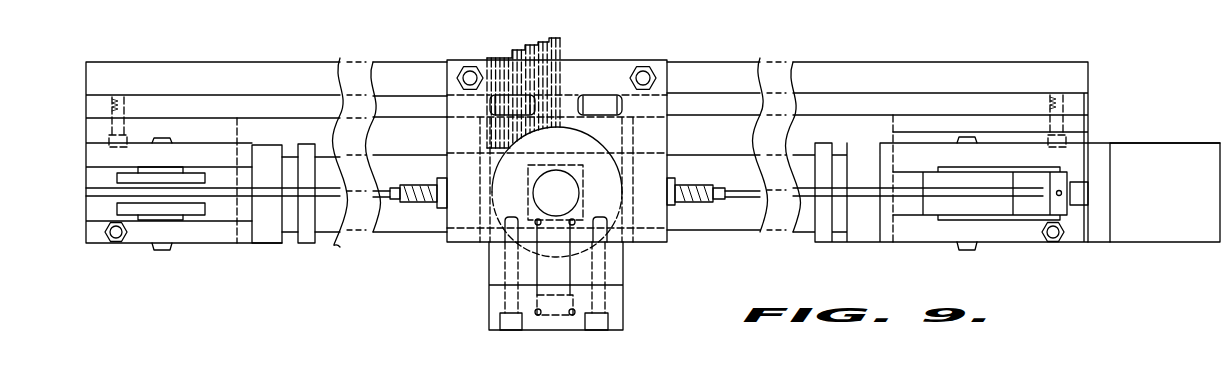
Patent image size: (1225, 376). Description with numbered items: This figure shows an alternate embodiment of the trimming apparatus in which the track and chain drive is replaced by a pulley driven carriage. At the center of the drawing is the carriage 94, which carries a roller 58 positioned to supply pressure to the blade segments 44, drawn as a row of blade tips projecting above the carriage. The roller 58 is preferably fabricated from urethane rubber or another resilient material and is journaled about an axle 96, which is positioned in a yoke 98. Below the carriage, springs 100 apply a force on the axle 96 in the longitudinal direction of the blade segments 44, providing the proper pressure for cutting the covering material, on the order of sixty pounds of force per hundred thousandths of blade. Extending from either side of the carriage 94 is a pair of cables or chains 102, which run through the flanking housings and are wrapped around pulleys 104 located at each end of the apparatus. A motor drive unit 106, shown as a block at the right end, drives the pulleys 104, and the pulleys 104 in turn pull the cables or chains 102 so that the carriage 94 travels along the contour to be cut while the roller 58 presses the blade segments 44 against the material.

The blade segments 44 is at (561, 42).
The roller 58 is at (608, 173).
The carriage 94 is at (657, 243).
The axle 96 is at (549, 180).
The yoke 98 is at (587, 170).
The springs 100 is at (563, 297).
The cables or chains 102 is at (328, 194).
The pulleys 104 is at (232, 198).
The motor drive unit 106 is at (1184, 204).